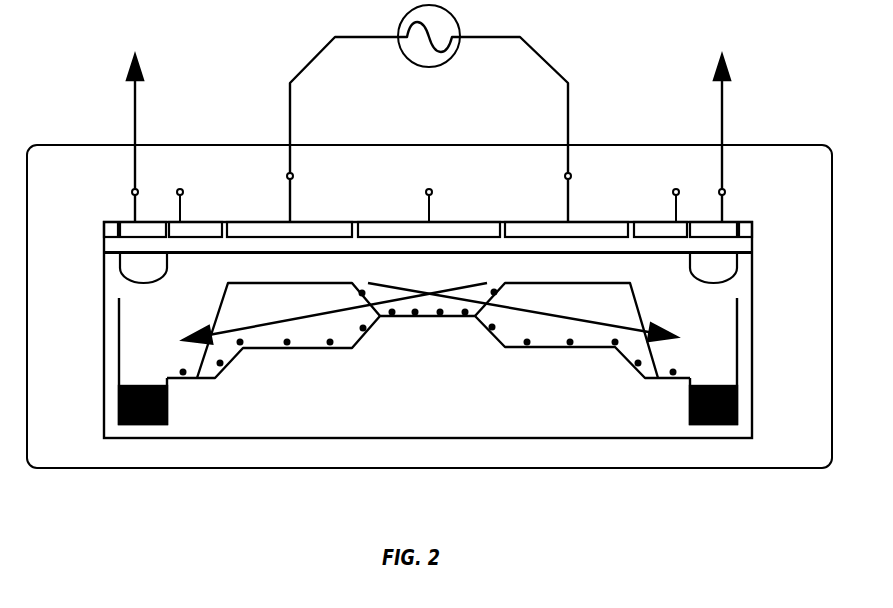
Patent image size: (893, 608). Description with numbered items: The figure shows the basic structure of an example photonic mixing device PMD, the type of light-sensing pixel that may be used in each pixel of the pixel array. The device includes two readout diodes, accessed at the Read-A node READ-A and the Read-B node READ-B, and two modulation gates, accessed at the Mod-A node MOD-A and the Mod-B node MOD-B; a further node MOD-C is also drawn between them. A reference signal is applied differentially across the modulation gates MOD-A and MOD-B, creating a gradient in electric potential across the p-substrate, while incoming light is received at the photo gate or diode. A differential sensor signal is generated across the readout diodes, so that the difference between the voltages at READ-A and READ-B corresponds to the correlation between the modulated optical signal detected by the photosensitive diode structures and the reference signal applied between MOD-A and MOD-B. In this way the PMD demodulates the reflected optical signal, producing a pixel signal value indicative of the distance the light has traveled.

The Read-A node READ-A is at (92, 138).
The Read-B node READ-B is at (737, 122).
The Mod-A node MOD-A is at (333, 178).
The Mod-B node MOD-B is at (615, 166).
The modulation electrode C terminal MOD-C is at (476, 181).
The photonic mixing device PMD is at (784, 443).